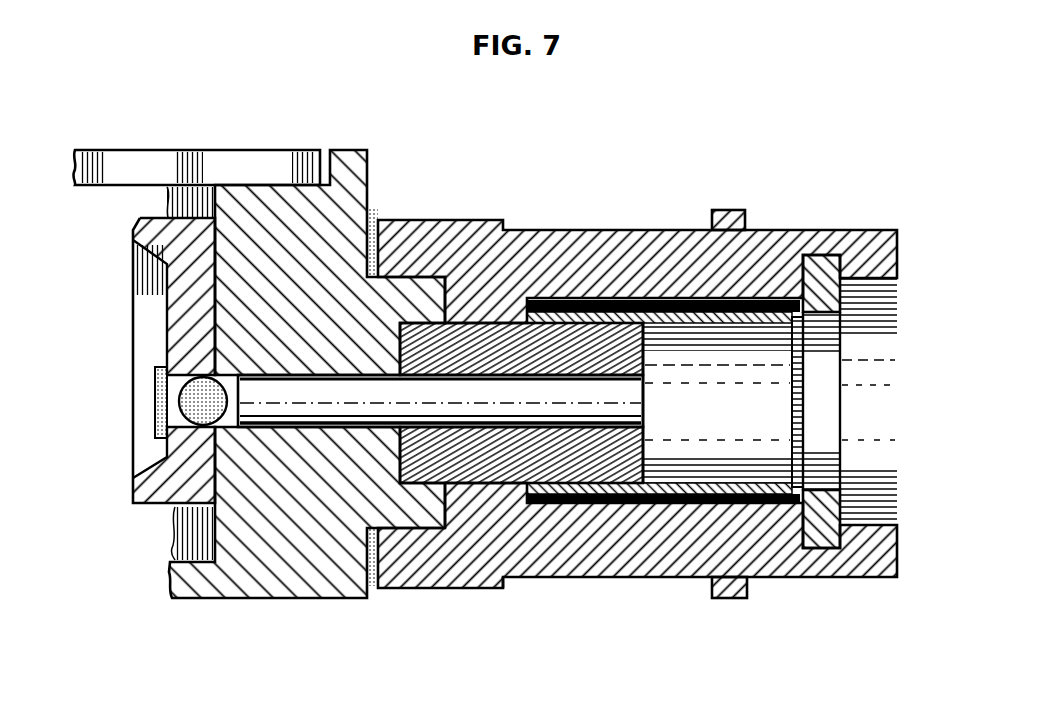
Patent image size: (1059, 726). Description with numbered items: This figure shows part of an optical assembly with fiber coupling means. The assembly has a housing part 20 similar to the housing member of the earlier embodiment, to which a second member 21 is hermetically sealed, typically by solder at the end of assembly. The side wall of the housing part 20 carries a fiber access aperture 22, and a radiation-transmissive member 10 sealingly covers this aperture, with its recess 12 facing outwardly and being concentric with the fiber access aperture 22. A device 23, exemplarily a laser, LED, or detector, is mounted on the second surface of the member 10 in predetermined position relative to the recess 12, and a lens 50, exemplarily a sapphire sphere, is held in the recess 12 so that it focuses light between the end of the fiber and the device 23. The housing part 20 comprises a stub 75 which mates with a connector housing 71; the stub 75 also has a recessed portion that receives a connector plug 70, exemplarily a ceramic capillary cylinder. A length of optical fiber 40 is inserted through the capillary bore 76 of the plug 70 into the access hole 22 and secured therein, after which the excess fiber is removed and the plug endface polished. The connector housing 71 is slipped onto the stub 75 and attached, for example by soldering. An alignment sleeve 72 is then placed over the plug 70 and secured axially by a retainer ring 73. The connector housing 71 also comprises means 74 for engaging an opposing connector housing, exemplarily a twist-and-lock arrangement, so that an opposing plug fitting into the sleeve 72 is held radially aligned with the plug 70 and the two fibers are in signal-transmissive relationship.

The radiation-transmissive member 10 is at (150, 484).
The recess 12 is at (150, 288).
The housing part 20 is at (290, 666).
The second member 21 is at (122, 150).
The fiber access aperture 22 is at (277, 427).
The device 23 is at (153, 396).
The optical fiber 40 is at (643, 403).
The lens 50 is at (205, 377).
The connector plug 70 is at (643, 447).
The connector housing 71 is at (593, 187).
The alignment sleeve 72 is at (660, 495).
The retainer ring 73 is at (818, 507).
The engaging means 74 is at (720, 210).
The stub 75 is at (417, 537).
The capillary bore 76 is at (643, 427).